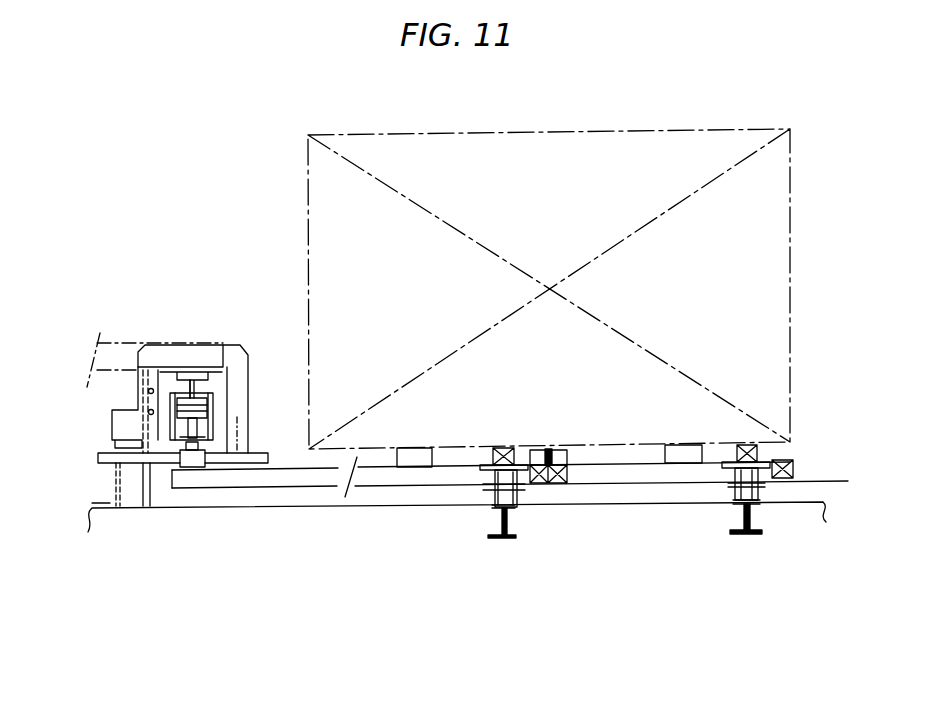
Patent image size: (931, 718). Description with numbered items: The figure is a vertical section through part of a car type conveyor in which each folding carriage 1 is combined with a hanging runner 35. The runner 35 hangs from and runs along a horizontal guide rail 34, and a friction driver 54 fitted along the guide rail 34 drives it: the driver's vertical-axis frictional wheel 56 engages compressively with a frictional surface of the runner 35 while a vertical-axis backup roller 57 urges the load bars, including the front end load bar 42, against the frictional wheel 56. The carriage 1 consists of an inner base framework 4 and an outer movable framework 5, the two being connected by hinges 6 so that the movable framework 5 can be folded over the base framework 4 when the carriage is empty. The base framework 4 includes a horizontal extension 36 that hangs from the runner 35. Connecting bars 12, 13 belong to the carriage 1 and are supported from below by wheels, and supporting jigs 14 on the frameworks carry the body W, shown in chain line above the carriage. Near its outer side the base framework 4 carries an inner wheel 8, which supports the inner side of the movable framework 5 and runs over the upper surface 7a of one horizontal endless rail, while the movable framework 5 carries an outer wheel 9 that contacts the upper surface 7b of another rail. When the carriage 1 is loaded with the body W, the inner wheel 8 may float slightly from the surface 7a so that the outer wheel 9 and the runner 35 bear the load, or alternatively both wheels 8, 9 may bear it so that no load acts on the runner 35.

The body W is at (308, 187).
The friction driver 54 is at (112, 420).
The front end load bar 42 is at (170, 418).
The horizontal guide rail 34 is at (210, 383).
The runner 35 is at (218, 416).
The horizontal extension 36 is at (207, 482).
The frictional wheel 56 is at (103, 463).
The backup roller 57 is at (223, 458).
The inner base framework 4 is at (412, 487).
The outer movable framework 5 is at (653, 486).
The folding carriage 1 is at (586, 458).
The supporting jig 14 is at (414, 455).
The connecting bar 12 is at (503, 447).
The hinge 6 is at (545, 449).
The connecting bar 13 is at (748, 444).
The outer wheel 9 is at (760, 492).
The upper surface of rail 7a is at (487, 490).
The inner wheel 8 is at (517, 495).
The upper surface of rail 7b is at (740, 492).